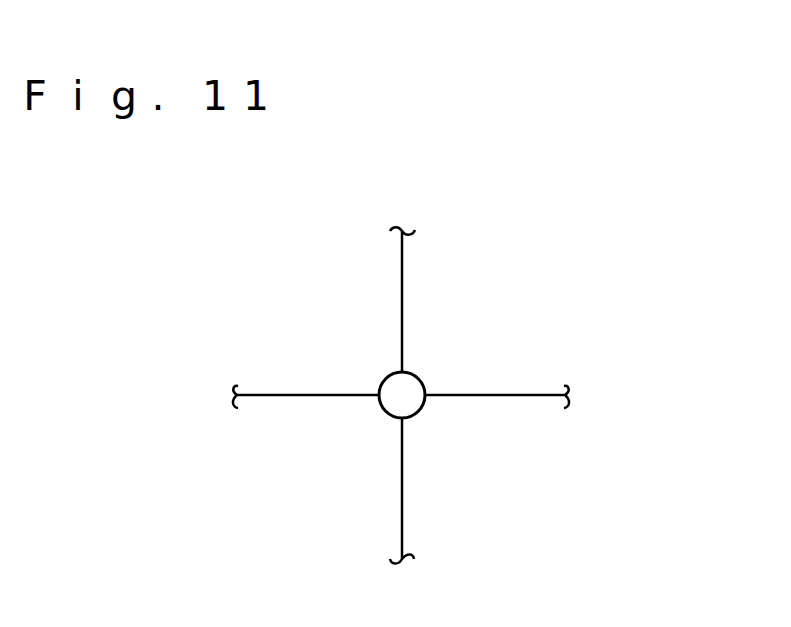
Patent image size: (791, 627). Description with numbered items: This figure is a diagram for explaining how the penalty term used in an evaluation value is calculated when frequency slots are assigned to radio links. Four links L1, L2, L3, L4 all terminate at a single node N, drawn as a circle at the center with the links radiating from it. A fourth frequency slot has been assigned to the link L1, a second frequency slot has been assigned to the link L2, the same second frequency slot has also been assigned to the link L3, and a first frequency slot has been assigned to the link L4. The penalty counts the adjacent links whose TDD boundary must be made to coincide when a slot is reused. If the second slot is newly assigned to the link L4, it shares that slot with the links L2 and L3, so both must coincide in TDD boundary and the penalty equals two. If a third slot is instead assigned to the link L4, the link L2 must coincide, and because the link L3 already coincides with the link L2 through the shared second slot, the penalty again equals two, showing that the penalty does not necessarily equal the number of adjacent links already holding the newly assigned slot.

The node N is at (402, 395).
The link L1 is at (406, 279).
The link L2 is at (216, 398).
The link L3 is at (405, 513).
The link L4 is at (567, 396).